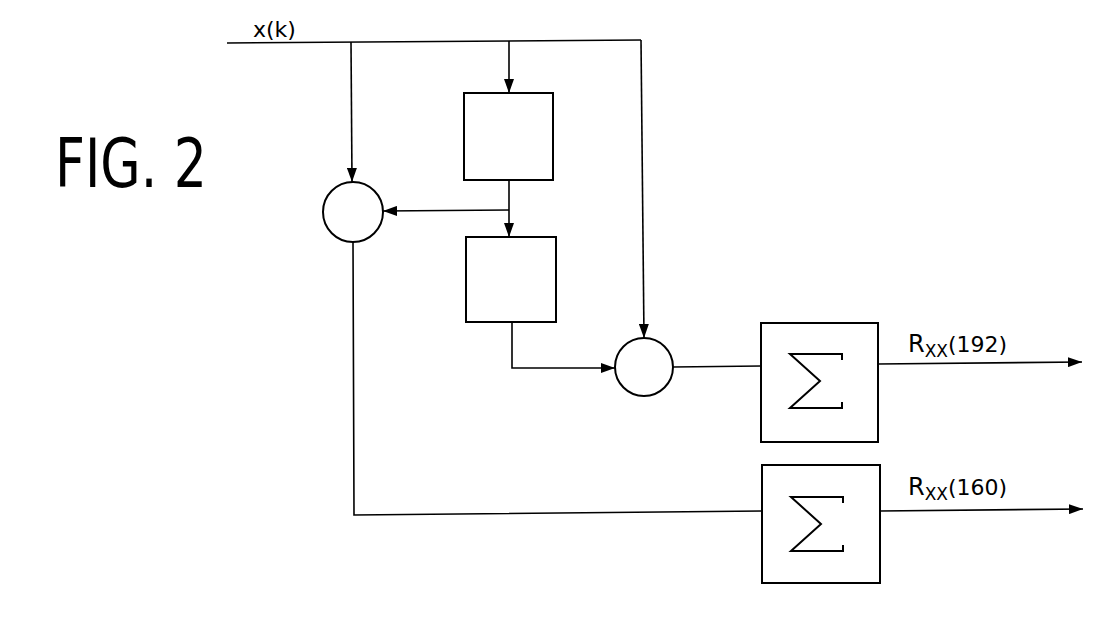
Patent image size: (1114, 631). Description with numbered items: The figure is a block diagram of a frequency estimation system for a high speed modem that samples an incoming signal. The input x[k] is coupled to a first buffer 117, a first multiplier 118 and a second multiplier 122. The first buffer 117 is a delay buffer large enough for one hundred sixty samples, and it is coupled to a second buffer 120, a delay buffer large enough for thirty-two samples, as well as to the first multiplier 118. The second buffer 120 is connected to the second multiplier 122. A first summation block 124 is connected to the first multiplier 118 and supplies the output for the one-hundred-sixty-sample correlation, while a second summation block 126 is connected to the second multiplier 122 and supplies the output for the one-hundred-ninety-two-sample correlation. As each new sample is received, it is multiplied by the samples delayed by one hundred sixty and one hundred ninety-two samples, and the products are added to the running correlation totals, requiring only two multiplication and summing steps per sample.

The first buffer 117 is at (553, 112).
The first multiplier 118 is at (333, 237).
The second buffer 120 is at (556, 277).
The second multiplier 122 is at (658, 342).
The first summation block 124 is at (880, 535).
The second summation block 126 is at (818, 323).